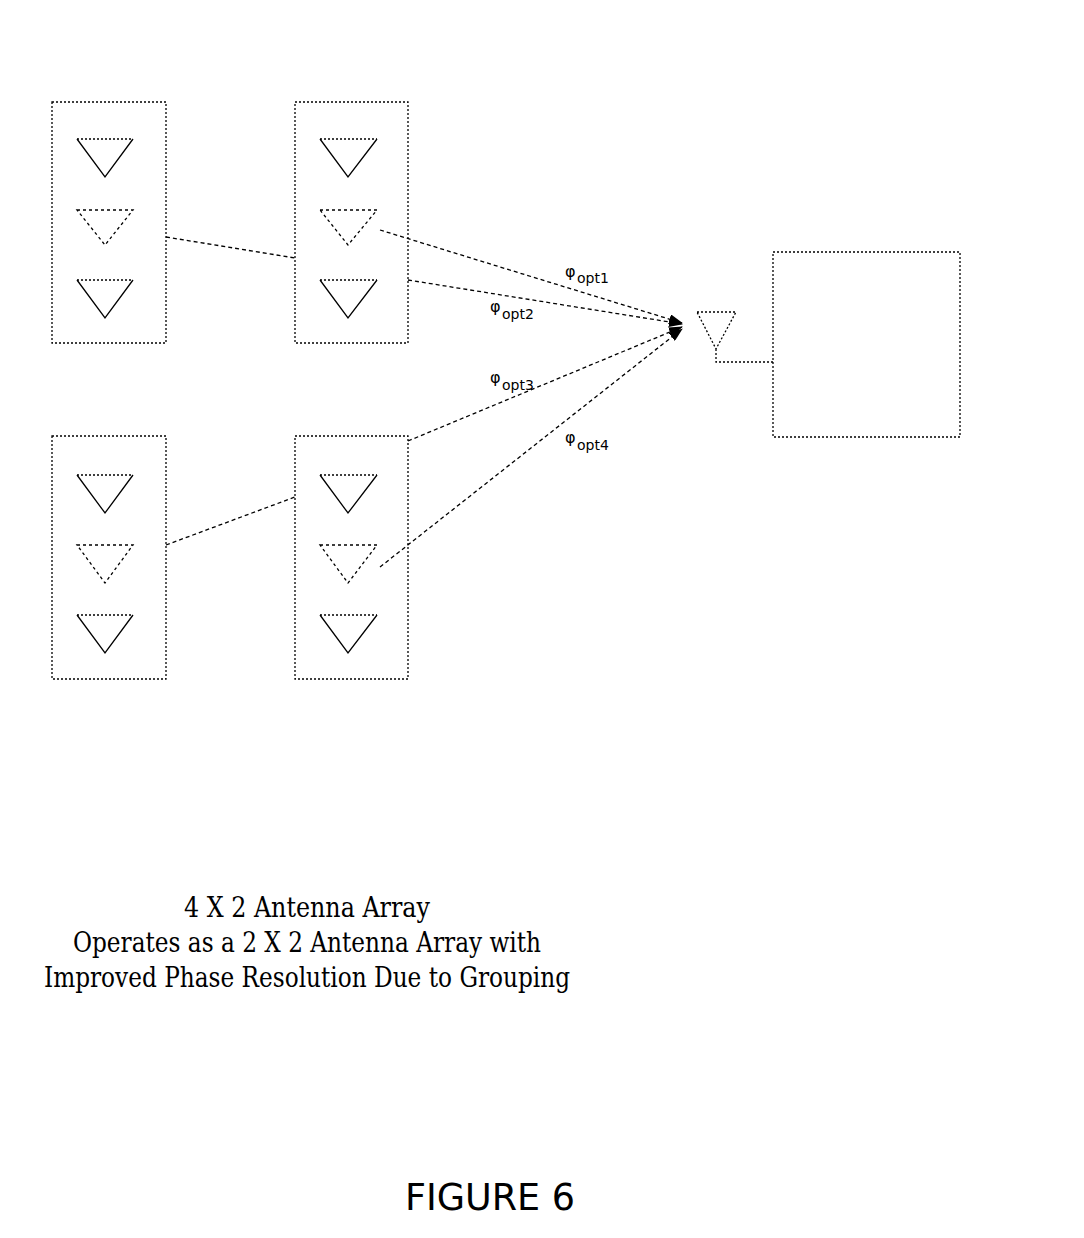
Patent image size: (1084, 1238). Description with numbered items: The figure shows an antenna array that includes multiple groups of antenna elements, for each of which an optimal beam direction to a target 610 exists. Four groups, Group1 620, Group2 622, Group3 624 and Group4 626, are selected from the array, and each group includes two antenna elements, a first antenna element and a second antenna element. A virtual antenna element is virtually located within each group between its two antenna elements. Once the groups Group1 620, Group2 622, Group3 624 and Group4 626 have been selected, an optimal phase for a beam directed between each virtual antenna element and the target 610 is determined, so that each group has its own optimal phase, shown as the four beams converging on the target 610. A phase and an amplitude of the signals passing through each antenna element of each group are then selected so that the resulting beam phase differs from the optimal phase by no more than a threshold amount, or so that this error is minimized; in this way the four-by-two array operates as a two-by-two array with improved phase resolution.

The target 610 is at (848, 351).
The Group1 620 is at (148, 155).
The Group2 622 is at (392, 165).
The Group3 624 is at (125, 660).
The Group4 626 is at (395, 652).